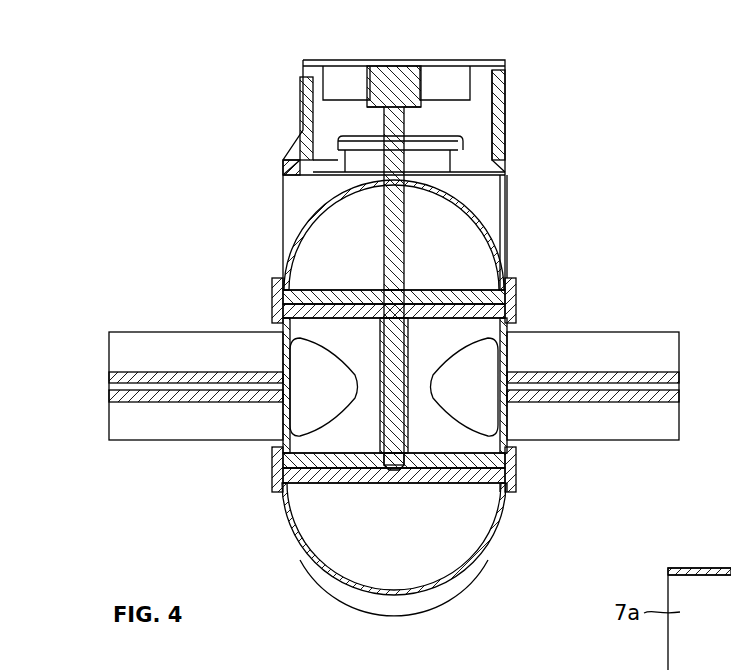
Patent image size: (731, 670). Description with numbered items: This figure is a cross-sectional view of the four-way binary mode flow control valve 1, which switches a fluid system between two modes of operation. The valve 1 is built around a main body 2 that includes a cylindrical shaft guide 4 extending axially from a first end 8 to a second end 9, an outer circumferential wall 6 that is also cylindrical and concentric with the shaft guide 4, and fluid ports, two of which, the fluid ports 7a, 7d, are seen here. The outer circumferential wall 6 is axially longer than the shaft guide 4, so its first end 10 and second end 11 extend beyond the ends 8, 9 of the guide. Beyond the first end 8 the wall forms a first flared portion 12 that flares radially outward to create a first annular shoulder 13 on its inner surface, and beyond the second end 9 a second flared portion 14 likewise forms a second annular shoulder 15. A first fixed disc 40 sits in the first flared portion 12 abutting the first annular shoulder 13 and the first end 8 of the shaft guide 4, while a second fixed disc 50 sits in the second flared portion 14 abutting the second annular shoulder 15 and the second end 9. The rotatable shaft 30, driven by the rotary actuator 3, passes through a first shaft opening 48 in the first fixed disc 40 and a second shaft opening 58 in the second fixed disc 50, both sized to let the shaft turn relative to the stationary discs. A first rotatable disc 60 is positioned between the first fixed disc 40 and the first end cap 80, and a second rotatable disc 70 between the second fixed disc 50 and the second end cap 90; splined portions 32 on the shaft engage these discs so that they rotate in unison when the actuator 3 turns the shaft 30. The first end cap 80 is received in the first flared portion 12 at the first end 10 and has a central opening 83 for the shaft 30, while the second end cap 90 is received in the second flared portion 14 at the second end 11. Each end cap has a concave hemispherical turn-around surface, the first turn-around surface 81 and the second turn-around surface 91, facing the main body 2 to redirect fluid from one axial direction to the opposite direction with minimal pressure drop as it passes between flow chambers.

The four-way binary mode flow control valve 1 is at (214, 150).
The main body 2 is at (507, 358).
The rotary actuator 3 is at (372, 100).
The shaft guide 4 is at (400, 390).
The outer circumferential wall 6 is at (507, 345).
The fluid port 7a is at (108, 366).
The fluid port 7d is at (680, 360).
The first end of the shaft guide 8 is at (428, 302).
The second end of the shaft guide 9 is at (420, 470).
The first end of the outer circumferential wall 10 is at (516, 290).
The second end of the outer circumferential wall 11 is at (510, 490).
The first flared portion 12 is at (516, 302).
The first annular shoulder 13 is at (476, 302).
The second flared portion 14 is at (516, 475).
The second annular shoulder 15 is at (476, 471).
The rotatable shaft 30 is at (402, 238).
The splined portions 32 is at (392, 290).
The first fixed disc 40 is at (281, 312).
The first shaft opening 48 is at (386, 328).
The second fixed disc 50 is at (281, 462).
The second shaft opening 58 is at (386, 446).
The first rotatable disc 60 is at (274, 290).
The second rotatable disc 70 is at (276, 478).
The first end cap 80 is at (297, 222).
The first turn-around surface 81 is at (301, 226).
The central opening 83 is at (384, 188).
The second end cap 90 is at (462, 570).
The second turn-around surface 91 is at (452, 582).